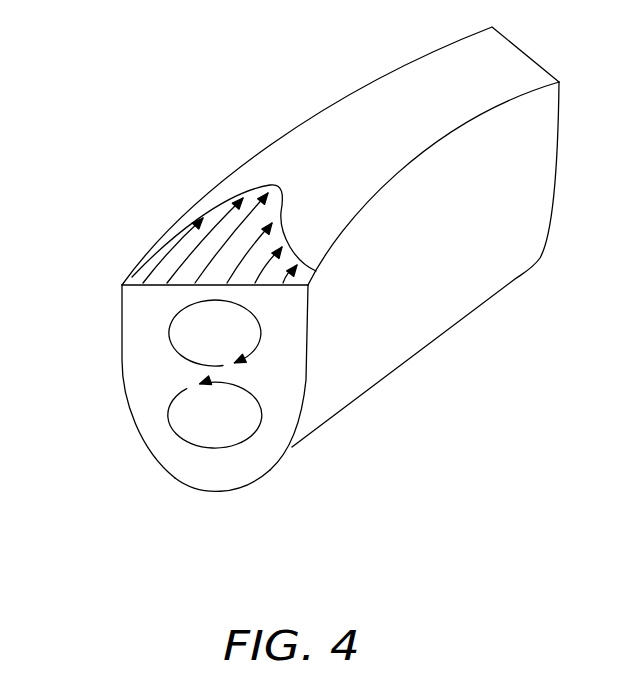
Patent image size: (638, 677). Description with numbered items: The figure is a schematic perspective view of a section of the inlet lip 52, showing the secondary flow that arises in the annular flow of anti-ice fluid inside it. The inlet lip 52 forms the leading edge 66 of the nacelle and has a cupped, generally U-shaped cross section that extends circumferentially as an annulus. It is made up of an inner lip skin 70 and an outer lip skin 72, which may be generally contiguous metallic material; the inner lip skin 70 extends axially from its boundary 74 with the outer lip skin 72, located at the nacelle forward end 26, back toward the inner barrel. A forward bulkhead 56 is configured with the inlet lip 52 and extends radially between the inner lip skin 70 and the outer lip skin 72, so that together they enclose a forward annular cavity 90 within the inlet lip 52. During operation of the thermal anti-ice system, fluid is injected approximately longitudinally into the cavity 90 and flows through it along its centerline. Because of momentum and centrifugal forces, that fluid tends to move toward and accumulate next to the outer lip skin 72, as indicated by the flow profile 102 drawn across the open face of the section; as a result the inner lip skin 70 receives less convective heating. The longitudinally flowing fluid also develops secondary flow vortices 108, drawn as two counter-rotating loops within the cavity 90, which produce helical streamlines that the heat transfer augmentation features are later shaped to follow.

The nacelle forward end 26 is at (334, 300).
The leading edge 66 is at (334, 300).
The boundary 74 is at (198, 493).
The inlet lip 52 is at (220, 388).
The forward bulkhead 56 is at (142, 275).
The inner lip skin 70 is at (307, 383).
The outer lip skin 72 is at (125, 397).
The forward cavity 90 is at (148, 408).
The flow profile 102 is at (252, 190).
The secondary flow vortices 108 is at (263, 335).